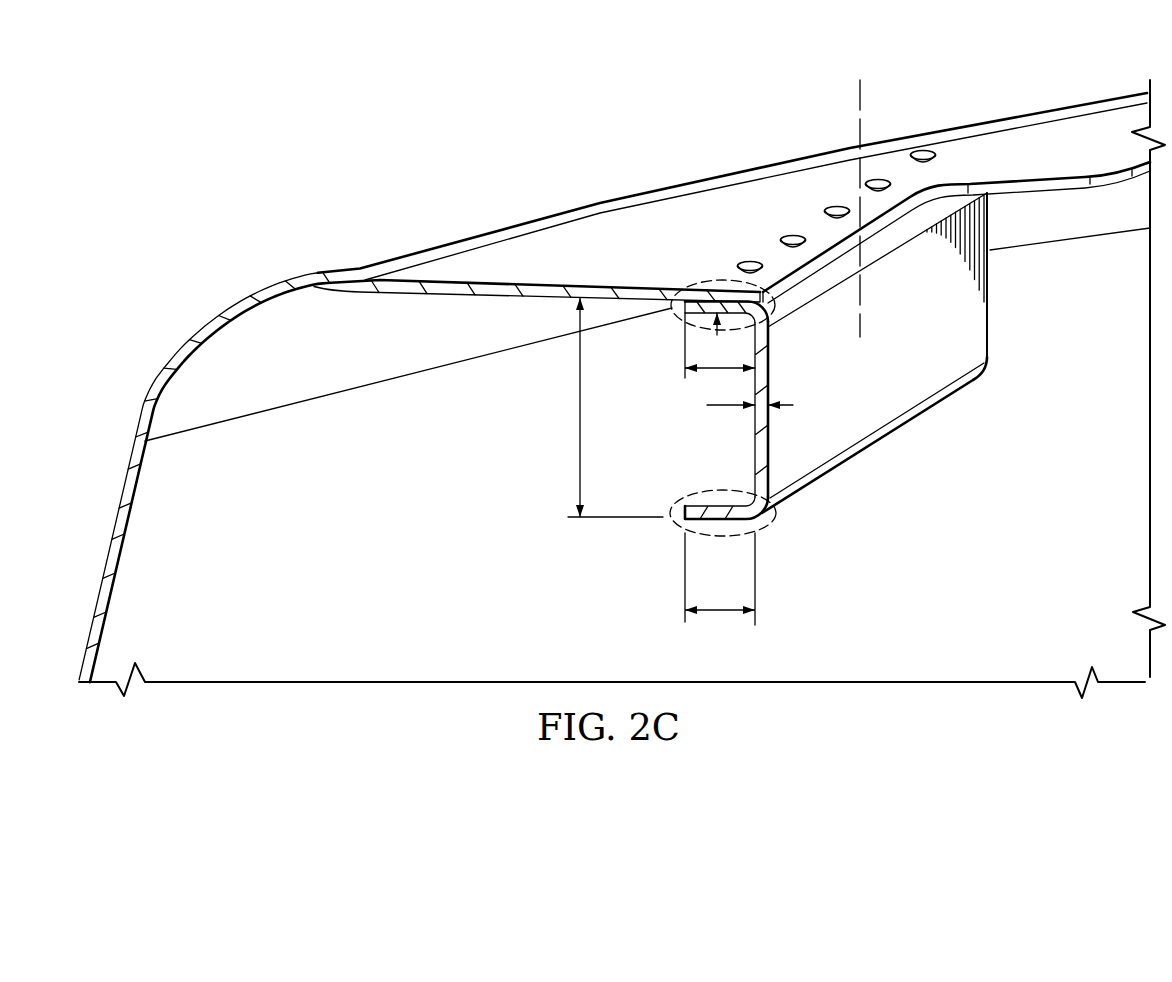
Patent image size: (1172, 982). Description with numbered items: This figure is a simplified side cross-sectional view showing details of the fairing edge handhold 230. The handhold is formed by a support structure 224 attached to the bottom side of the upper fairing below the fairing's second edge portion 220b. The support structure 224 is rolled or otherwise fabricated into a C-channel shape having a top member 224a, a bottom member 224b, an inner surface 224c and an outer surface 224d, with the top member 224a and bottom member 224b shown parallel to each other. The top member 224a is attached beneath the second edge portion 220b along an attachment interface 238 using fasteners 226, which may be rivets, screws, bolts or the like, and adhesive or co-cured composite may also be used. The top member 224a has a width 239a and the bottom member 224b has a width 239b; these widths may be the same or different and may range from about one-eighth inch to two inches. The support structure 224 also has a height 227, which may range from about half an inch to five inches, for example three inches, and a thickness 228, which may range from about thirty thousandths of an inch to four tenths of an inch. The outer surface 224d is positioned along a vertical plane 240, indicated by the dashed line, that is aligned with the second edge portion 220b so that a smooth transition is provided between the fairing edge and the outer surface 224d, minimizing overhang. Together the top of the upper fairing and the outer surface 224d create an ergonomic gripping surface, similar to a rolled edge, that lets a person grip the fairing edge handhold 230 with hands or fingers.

The second edge portion 220b is at (883, 223).
The support structure 224 is at (813, 364).
The top member 224a is at (717, 280).
The bottom member 224b is at (687, 497).
The inner surface 224c is at (742, 482).
The outer surface 224d is at (902, 395).
The fasteners 226 is at (938, 153).
The height 227 is at (580, 408).
The thickness 228 is at (798, 403).
The fairing edge handhold 230 is at (1024, 309).
The attachment interface 238 is at (717, 335).
The width of the top member 239a is at (720, 373).
The width of the bottom member 239b is at (723, 614).
The vertical plane 240 is at (858, 112).